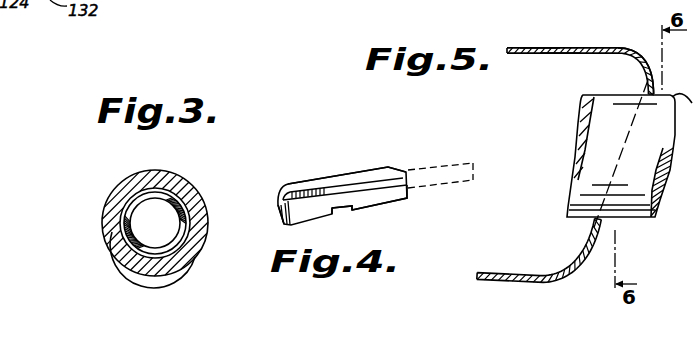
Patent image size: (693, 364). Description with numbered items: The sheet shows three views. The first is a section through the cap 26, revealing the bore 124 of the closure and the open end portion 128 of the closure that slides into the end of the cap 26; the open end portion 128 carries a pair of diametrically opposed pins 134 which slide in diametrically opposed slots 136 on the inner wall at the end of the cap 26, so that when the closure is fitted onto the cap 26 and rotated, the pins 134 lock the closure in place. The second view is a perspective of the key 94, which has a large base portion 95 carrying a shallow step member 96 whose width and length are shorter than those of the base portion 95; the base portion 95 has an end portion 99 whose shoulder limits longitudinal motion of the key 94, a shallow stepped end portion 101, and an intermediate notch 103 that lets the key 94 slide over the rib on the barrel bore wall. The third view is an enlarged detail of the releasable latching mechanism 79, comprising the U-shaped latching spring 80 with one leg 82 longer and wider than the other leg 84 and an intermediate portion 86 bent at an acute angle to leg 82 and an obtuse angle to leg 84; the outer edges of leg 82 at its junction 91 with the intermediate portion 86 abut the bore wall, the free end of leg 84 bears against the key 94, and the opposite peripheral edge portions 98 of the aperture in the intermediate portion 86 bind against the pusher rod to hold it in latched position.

In FIG. 3, the cap 26 is at (163, 153).
In FIG. 3, the bore 124 is at (138, 190).
In FIG. 3, the open end portion 128 is at (125, 214).
In FIG. 3, the pins 134 is at (168, 211).
In FIG. 3, the slots 136 is at (193, 266).
In FIG. 4, the key 94 is at (300, 177).
In FIG. 4, the step member 96 is at (347, 180).
In FIG. 4, the base portion 95 is at (301, 226).
In FIG. 4, the end portion 99 is at (278, 218).
In FIG. 4, the intermediate notch 103 is at (357, 210).
In FIG. 4, the shallow stepped end portion 101 is at (389, 199).
In FIG. 4, the leg 84 is at (440, 163).
In FIG. 5, the leg 84 is at (528, 247).
In FIG. 5, the latching spring 80 is at (601, 14).
In FIG. 5, the leg 82 is at (540, 46).
In FIG. 5, the junction 91 is at (637, 46).
In FIG. 5, the releasable latching mechanism 79 is at (556, 58).
In FIG. 5, the intermediate portion 86 is at (603, 231).
In FIG. 5, the peripheral edge portions 98 is at (640, 91).